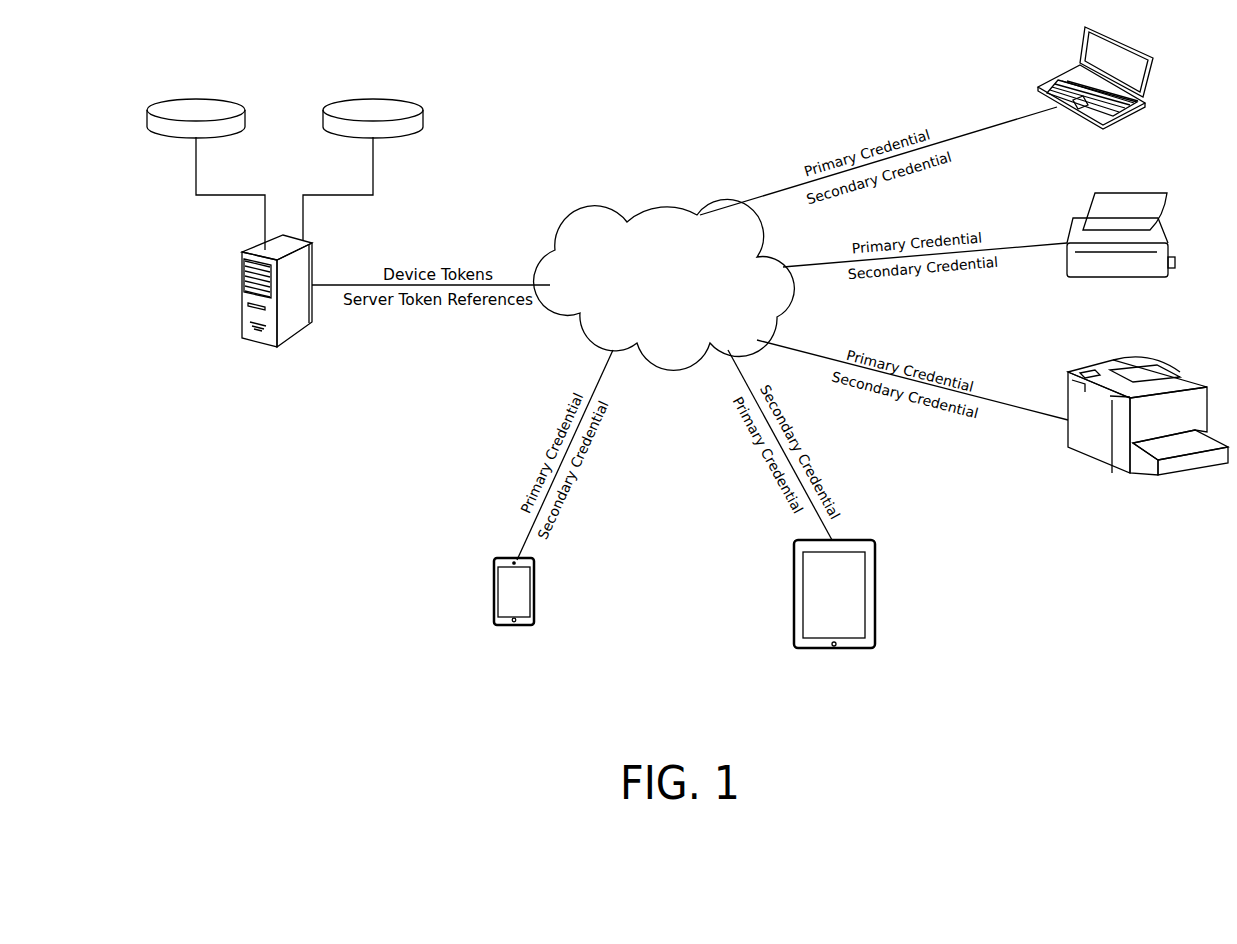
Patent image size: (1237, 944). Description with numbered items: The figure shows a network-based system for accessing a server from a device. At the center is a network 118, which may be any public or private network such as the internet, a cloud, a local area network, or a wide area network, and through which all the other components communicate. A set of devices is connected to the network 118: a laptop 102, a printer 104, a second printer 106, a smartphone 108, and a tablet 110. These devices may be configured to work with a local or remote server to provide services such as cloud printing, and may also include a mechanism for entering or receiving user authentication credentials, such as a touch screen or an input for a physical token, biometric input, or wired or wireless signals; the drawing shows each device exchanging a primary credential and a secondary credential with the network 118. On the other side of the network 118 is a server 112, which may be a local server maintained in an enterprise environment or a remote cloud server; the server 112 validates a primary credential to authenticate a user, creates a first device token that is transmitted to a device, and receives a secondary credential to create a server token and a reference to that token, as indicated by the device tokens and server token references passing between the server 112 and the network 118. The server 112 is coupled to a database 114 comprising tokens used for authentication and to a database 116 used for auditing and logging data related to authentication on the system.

The laptop 102 is at (1135, 43).
The printer 104 is at (1135, 195).
The printer 106 is at (1148, 360).
The smartphone 108 is at (520, 623).
The tablet 110 is at (845, 650).
The server 112 is at (262, 245).
The database 114 is at (337, 135).
The database 116 is at (168, 135).
The network 118 is at (597, 210).